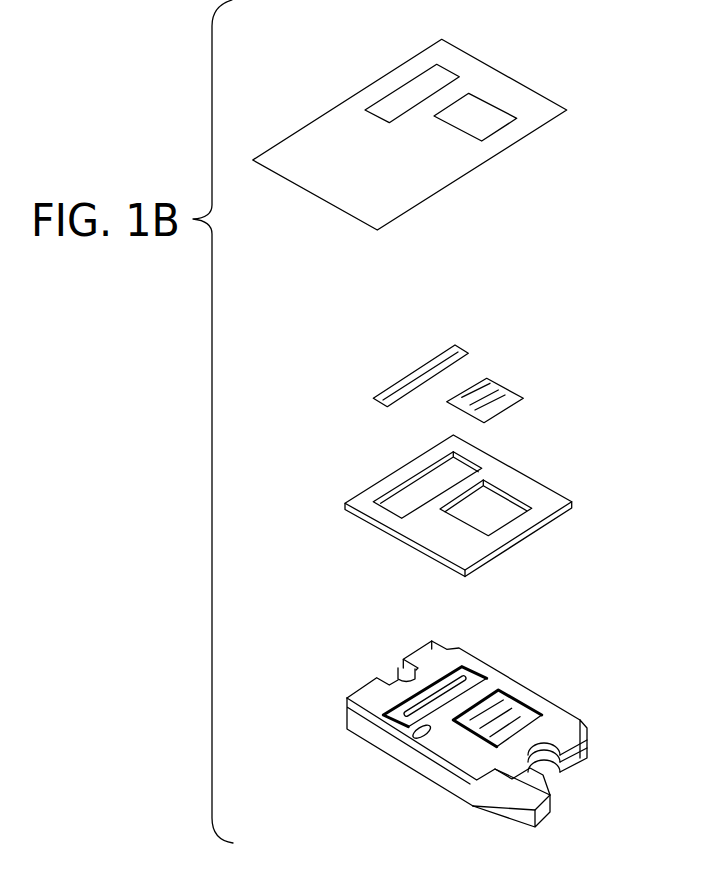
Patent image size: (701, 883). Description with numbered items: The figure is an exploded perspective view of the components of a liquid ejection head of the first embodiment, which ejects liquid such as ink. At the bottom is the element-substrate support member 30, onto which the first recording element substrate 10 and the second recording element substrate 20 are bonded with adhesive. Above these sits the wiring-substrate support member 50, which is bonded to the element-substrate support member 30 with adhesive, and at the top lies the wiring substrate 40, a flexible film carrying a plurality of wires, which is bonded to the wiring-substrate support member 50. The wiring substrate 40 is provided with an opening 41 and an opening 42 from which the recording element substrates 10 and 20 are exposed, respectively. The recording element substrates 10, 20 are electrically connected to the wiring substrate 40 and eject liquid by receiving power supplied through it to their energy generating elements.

The recording element substrate 10 is at (462, 345).
The recording element substrate 20 is at (505, 390).
The element-substrate support member 30 is at (553, 722).
The wiring substrate 40 is at (440, 173).
The opening 41 is at (383, 118).
The opening 42 is at (493, 130).
The wiring-substrate support member 50 is at (545, 495).